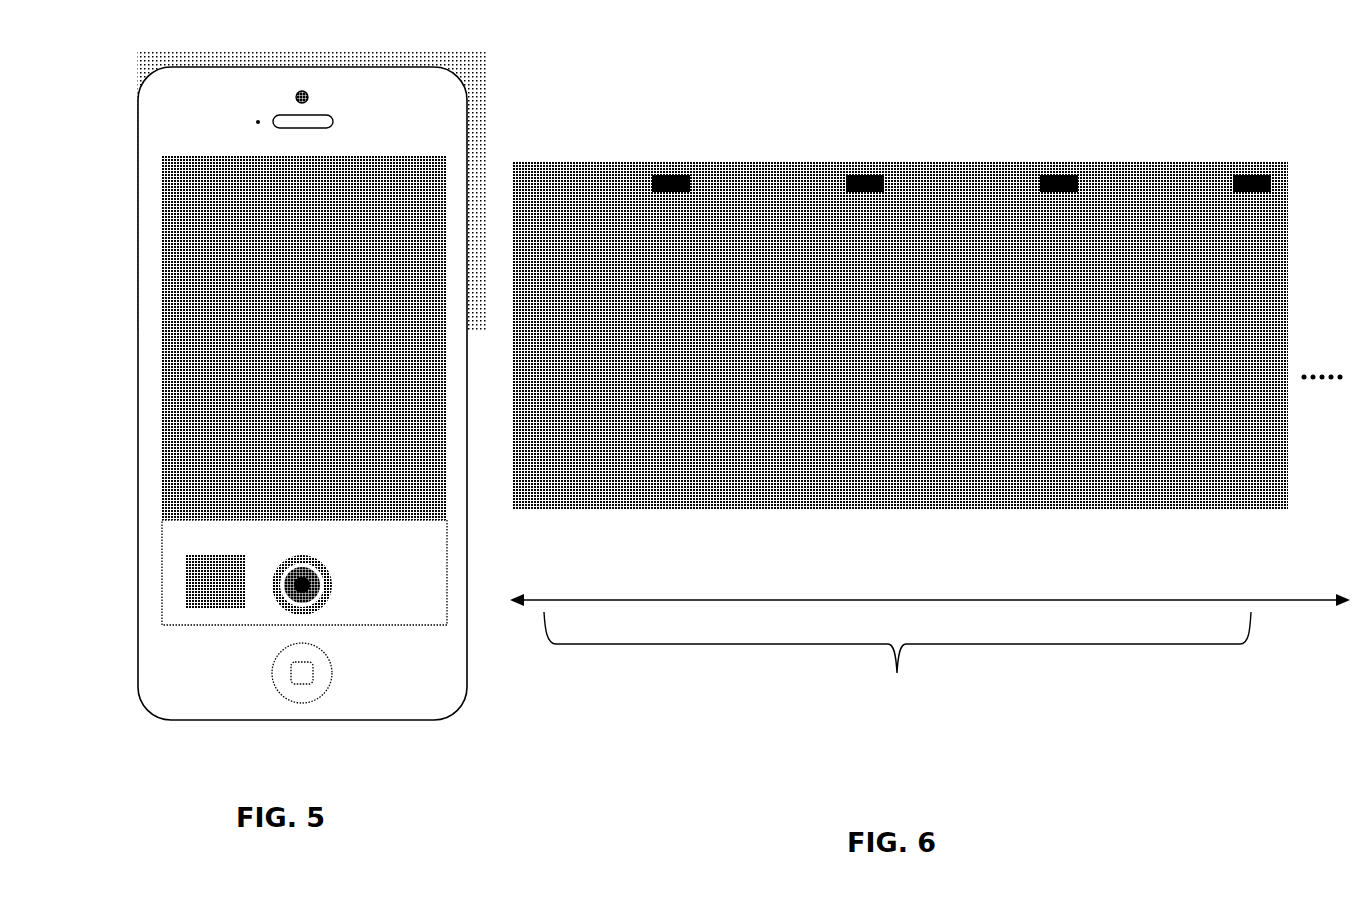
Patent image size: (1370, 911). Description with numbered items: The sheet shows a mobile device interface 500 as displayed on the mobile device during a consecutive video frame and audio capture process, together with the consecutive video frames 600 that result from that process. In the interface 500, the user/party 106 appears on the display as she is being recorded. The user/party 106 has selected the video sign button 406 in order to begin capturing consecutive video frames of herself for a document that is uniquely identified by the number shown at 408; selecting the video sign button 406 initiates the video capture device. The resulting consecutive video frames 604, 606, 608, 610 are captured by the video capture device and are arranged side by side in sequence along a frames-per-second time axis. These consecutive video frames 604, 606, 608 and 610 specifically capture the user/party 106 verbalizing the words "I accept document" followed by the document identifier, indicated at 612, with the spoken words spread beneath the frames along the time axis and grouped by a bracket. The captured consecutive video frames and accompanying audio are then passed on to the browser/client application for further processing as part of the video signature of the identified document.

In FIG. 5, the mobile device interface 500 is at (458, 50).
In FIG. 5, the user/party 106 is at (262, 158).
In FIG. 5, the video sign button 406 is at (288, 608).
In FIG. 5, the document identifier display 408 is at (400, 592).
In FIG. 6, the consecutive video frames 600 is at (1020, 75).
In FIG. 6, the video frame 604 is at (597, 172).
In FIG. 6, the video frame 606 is at (772, 172).
In FIG. 6, the video frame 608 is at (973, 168).
In FIG. 6, the video frame 610 is at (1173, 167).
In FIG. 6, the verbalized words 612 is at (930, 641).